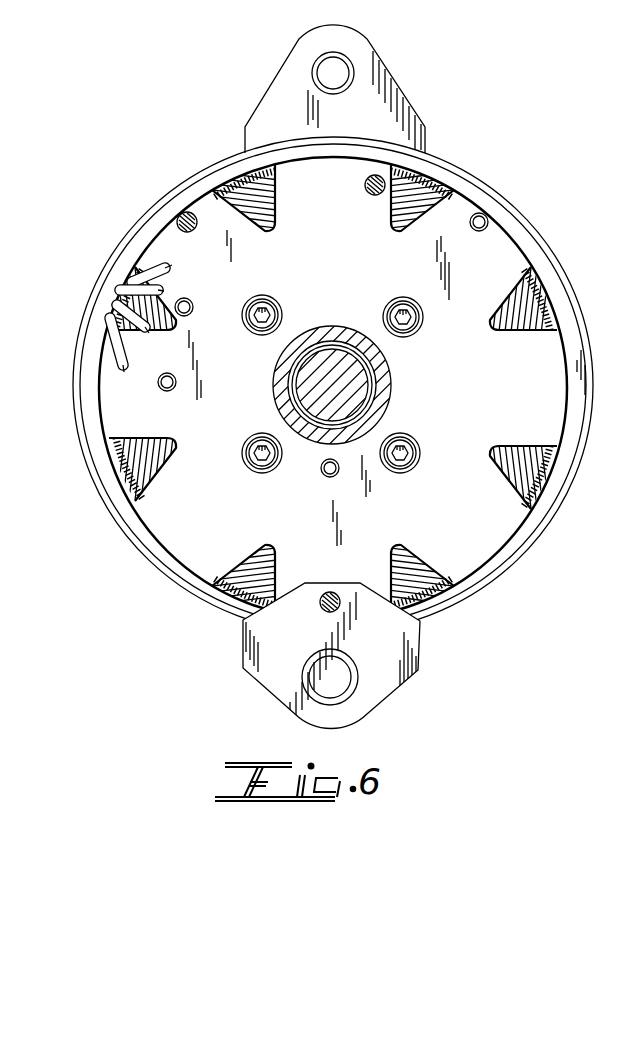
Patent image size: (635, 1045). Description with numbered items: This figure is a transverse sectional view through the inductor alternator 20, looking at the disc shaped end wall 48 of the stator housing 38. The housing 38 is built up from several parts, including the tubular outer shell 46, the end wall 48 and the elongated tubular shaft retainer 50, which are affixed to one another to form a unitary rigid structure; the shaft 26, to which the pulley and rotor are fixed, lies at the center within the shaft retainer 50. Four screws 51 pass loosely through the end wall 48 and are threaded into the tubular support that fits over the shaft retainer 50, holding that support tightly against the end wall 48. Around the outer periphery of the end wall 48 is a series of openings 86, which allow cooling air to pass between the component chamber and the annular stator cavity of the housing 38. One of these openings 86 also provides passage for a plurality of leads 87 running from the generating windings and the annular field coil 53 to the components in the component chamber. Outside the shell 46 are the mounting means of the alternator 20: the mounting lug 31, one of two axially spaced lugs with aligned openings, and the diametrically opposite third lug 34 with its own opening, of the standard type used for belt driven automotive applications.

The inductor alternator 20 is at (348, 377).
The shaft 26 is at (355, 390).
The mounting lug 31 is at (384, 690).
The third mounting lug 34 is at (384, 69).
The stator housing 38 is at (430, 152).
The tubular outer shell 46 is at (198, 176).
The end wall 48 is at (553, 372).
The shaft retainer 50 is at (387, 380).
The screws 51 is at (269, 304).
The annular field coil 53 is at (534, 292).
The openings 86 is at (550, 318).
The leads 87 is at (113, 320).